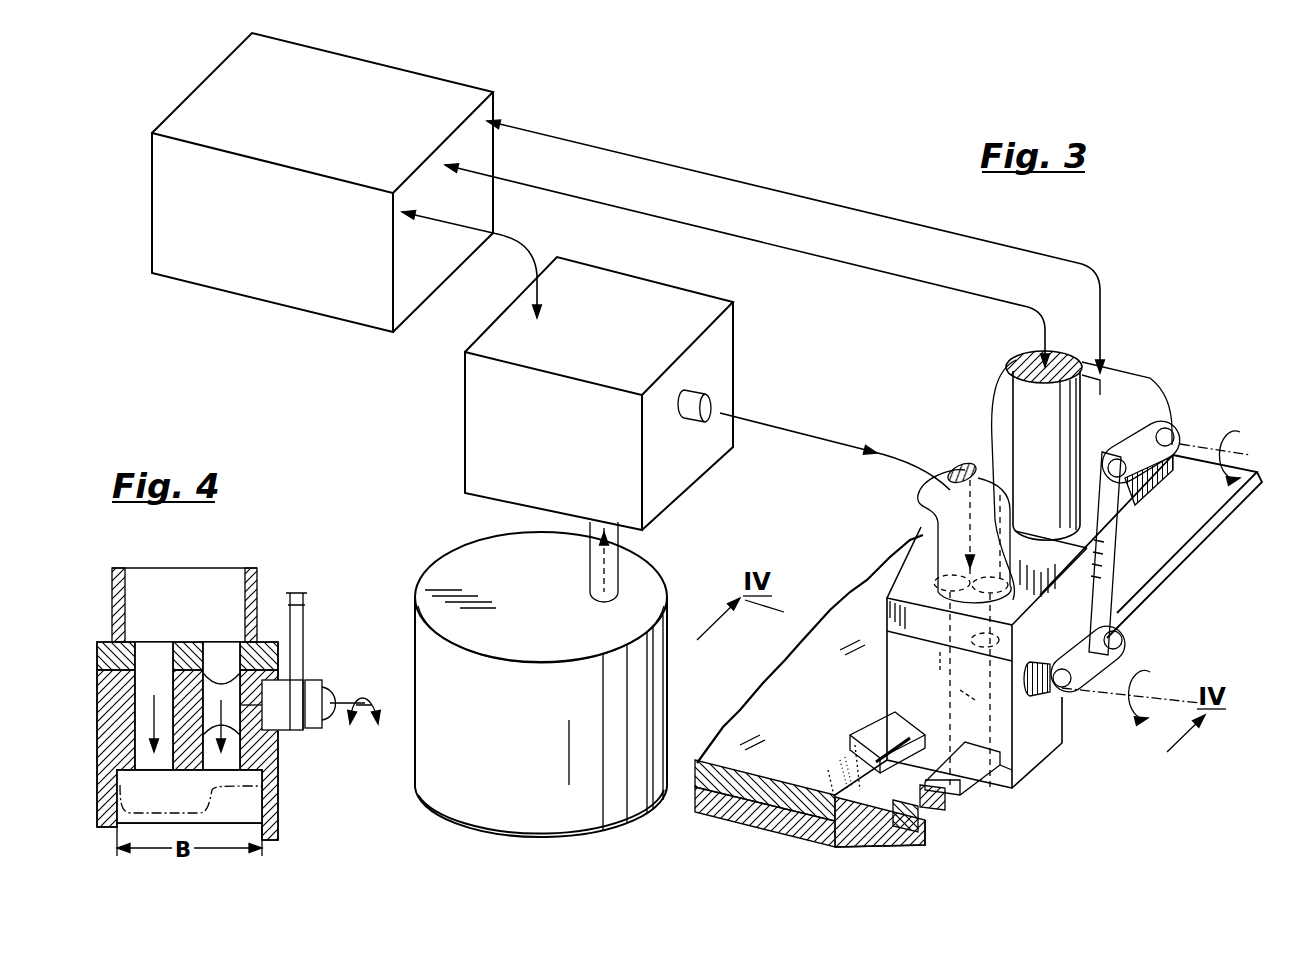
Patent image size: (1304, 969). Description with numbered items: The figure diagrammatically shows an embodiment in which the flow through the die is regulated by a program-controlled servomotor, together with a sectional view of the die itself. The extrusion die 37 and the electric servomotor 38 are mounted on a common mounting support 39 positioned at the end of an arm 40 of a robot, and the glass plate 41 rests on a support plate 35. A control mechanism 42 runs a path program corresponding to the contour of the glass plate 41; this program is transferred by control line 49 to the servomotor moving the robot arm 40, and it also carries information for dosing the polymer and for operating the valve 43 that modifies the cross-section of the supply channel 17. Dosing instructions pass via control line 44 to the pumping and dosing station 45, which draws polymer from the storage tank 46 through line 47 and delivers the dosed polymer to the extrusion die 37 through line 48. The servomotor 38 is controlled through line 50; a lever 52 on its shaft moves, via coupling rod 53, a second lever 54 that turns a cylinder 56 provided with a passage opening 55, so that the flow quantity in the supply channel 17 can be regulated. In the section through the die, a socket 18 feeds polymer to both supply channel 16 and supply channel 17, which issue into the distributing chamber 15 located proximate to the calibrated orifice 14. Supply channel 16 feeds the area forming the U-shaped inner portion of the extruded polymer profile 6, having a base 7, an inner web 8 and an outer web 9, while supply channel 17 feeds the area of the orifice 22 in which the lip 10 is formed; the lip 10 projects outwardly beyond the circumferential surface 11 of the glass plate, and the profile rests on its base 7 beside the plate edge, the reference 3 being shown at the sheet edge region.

In FIG. 3, the workpiece sheet 3 is at (828, 772).
In FIG. 3, the extruded polymer profile 6 is at (863, 747).
In FIG. 4, the extruded polymer profile 6 is at (98, 803).
In FIG. 3, the base 7 is at (893, 815).
In FIG. 3, the inner web 8 is at (838, 758).
In FIG. 3, the outer web 9 is at (913, 790).
In FIG. 3, the lip 10 is at (968, 778).
In FIG. 3, the circumferential surface 11 is at (937, 817).
In FIG. 3, the calibrated orifice 14 is at (923, 755).
In FIG. 4, the distributing chamber 15 is at (185, 807).
In FIG. 3, the supply channel 16 is at (950, 635).
In FIG. 4, the supply channel 16 is at (152, 655).
In FIG. 3, the supply channel 17 is at (1006, 582).
In FIG. 4, the supply channel 17 is at (223, 655).
In FIG. 3, the socket 18 is at (1003, 556).
In FIG. 4, the socket 18 is at (193, 585).
In FIG. 3, the calibrated orifice 22 is at (1010, 778).
In FIG. 3, the support plate 35 is at (713, 810).
In FIG. 3, the extrusion die 37 is at (1056, 761).
In FIG. 4, the extrusion die 37 is at (90, 638).
In FIG. 3, the servomotor 38 is at (1128, 374).
In FIG. 3, the mounting support 39 is at (1153, 510).
In FIG. 4, the mounting support 39 is at (290, 662).
In FIG. 3, the arm 40 is at (1022, 404).
In FIG. 3, the glass plate 41 is at (1170, 580).
In FIG. 3, the control mechanism 42 is at (253, 278).
In FIG. 3, the valve 43 is at (953, 669).
In FIG. 4, the valve 43 is at (318, 645).
In FIG. 3, the control line 44 is at (520, 238).
In FIG. 3, the pumping and dosing station 45 is at (478, 447).
In FIG. 3, the storage tank 46 is at (653, 693).
In FIG. 3, the line 47 is at (590, 572).
In FIG. 3, the line 48 is at (843, 440).
In FIG. 3, the control line 49 is at (667, 215).
In FIG. 3, the line 50 is at (782, 190).
In FIG. 3, the lever 52 is at (1140, 440).
In FIG. 3, the coupling rod 53 is at (1113, 540).
In FIG. 4, the coupling rod 53 is at (305, 606).
In FIG. 3, the lever 54 is at (1112, 662).
In FIG. 4, the lever 54 is at (320, 680).
In FIG. 3, the passage opening 55 is at (965, 690).
In FIG. 4, the passage opening 55 is at (244, 716).
In FIG. 3, the cylinder 56 is at (1036, 693).
In FIG. 4, the cylinder 56 is at (283, 727).